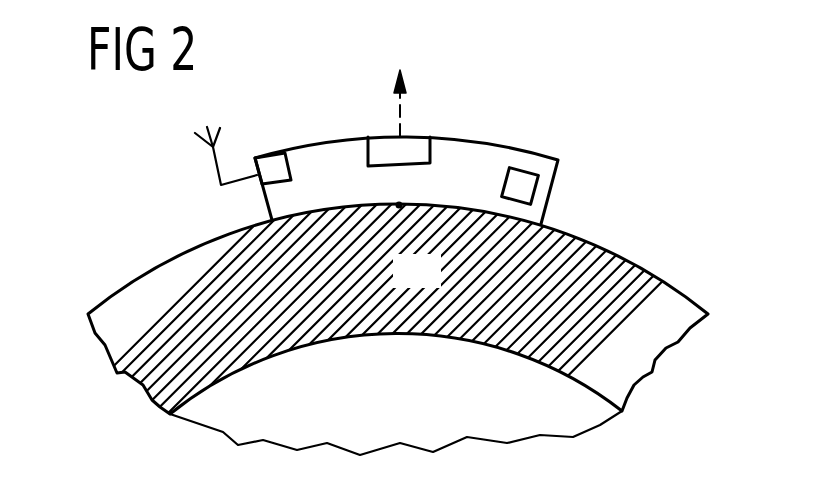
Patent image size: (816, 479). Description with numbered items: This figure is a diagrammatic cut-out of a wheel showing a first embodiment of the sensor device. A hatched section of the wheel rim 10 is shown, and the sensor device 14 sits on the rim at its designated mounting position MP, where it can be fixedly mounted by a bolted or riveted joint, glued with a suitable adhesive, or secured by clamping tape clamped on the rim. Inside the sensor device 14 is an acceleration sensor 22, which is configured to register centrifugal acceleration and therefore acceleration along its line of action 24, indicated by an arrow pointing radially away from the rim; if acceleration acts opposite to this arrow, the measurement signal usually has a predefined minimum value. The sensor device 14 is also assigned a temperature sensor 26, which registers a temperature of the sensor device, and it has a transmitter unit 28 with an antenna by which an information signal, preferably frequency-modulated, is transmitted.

The rim 10 is at (350, 337).
The sensor device 14 is at (328, 157).
The acceleration sensor 22 is at (390, 148).
The line of action 24 is at (404, 110).
The temperature sensor 26 is at (522, 178).
The transmitter unit 28 is at (272, 163).
The mounting position MP is at (399, 207).